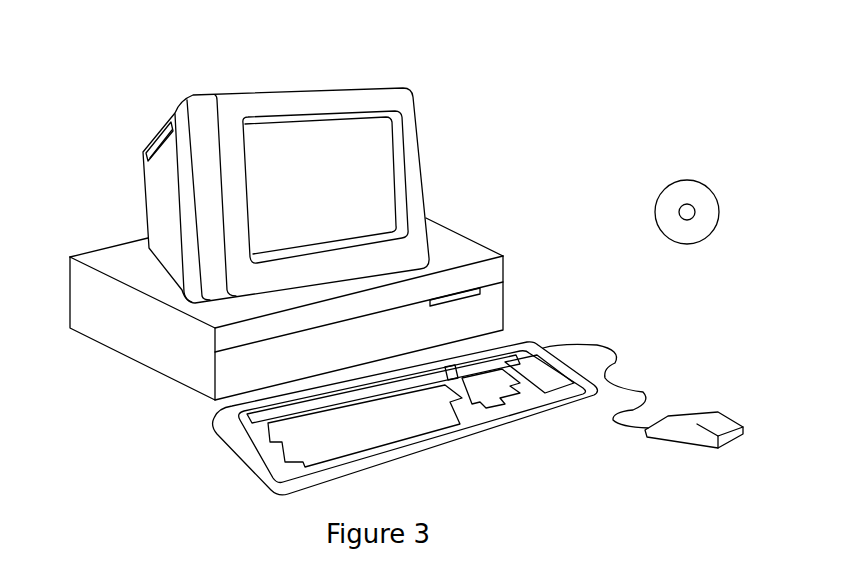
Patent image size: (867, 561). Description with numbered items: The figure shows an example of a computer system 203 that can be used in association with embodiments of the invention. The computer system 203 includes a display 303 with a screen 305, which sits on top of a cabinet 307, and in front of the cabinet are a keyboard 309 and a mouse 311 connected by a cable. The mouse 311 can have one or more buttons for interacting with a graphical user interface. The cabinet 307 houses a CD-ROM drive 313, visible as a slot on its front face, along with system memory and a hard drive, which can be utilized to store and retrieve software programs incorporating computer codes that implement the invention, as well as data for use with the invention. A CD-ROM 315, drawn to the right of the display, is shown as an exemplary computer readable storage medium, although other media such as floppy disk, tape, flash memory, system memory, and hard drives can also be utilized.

The computer system 203 is at (614, 65).
The display 303 is at (425, 197).
The screen 305 is at (392, 150).
The cabinet 307 is at (167, 383).
The keyboard 309 is at (400, 457).
The mouse 311 is at (727, 420).
The CD-ROM drive 313 is at (480, 288).
The CD-ROM 315 is at (700, 183).